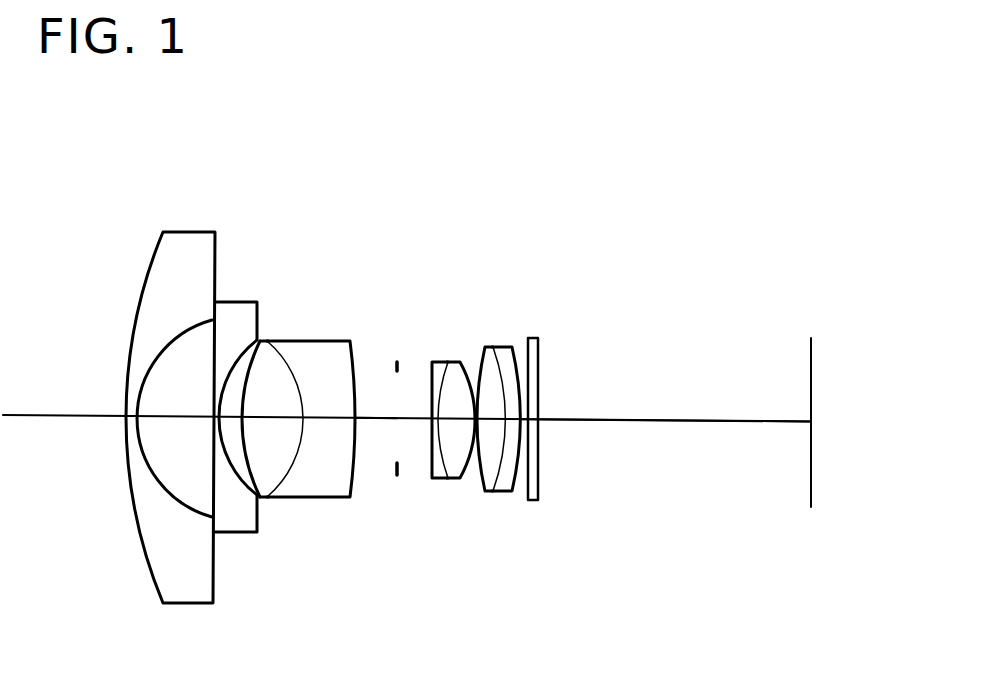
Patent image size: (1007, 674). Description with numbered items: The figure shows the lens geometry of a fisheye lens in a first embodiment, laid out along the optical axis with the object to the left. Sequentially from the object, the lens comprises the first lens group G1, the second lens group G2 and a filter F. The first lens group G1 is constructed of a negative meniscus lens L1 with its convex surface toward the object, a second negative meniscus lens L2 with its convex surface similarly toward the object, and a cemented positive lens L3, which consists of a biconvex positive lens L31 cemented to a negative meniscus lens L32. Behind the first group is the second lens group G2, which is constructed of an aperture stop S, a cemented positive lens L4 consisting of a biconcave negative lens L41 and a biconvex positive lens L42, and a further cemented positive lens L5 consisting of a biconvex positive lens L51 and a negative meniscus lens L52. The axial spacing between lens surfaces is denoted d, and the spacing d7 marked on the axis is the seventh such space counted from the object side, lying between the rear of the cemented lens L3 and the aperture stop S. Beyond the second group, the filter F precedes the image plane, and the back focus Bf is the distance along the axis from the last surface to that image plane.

The first lens group G1 is at (310, 140).
The negative meniscus lens L1 is at (190, 230).
The negative meniscus lens L2 is at (242, 300).
The cemented positive lens L3 is at (355, 325).
The biconvex positive lens L31 is at (265, 498).
The negative meniscus lens L32 is at (318, 498).
The aperture stop S is at (398, 358).
The space between lens surfaces d7 is at (377, 427).
The second lens group G2 is at (507, 208).
The cemented positive lens L4 is at (465, 356).
The biconcave negative lens L41 is at (442, 480).
The biconvex positive lens L42 is at (455, 480).
The cemented positive lens L5 is at (517, 341).
The biconvex positive lens L51 is at (487, 493).
The negative meniscus lens L52 is at (503, 493).
The filter F is at (533, 338).
The back focus Bf is at (648, 422).